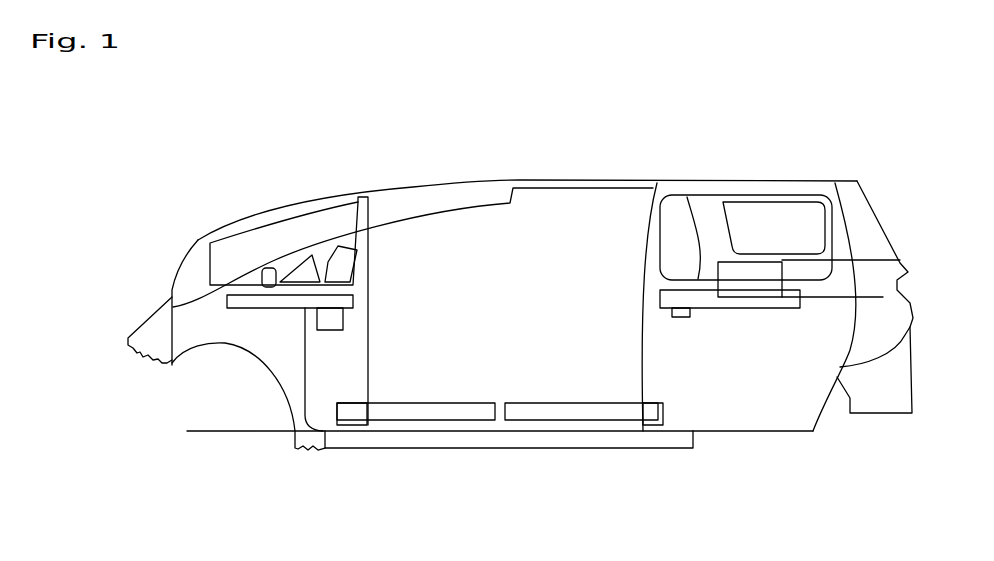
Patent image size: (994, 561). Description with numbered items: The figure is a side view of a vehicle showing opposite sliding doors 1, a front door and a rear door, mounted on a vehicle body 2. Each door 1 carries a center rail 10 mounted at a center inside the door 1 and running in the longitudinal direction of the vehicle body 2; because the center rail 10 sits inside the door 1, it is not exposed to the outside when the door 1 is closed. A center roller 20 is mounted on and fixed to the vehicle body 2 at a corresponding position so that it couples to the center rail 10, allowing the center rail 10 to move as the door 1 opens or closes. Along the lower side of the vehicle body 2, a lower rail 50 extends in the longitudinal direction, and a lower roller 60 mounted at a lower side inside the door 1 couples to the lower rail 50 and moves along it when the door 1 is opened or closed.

The opposite sliding doors 1 is at (203, 413).
The vehicle body 2 is at (437, 187).
The center rail 10 is at (262, 295).
The center roller 20 is at (340, 320).
The lower rail 50 is at (450, 413).
The lower roller 60 is at (350, 412).